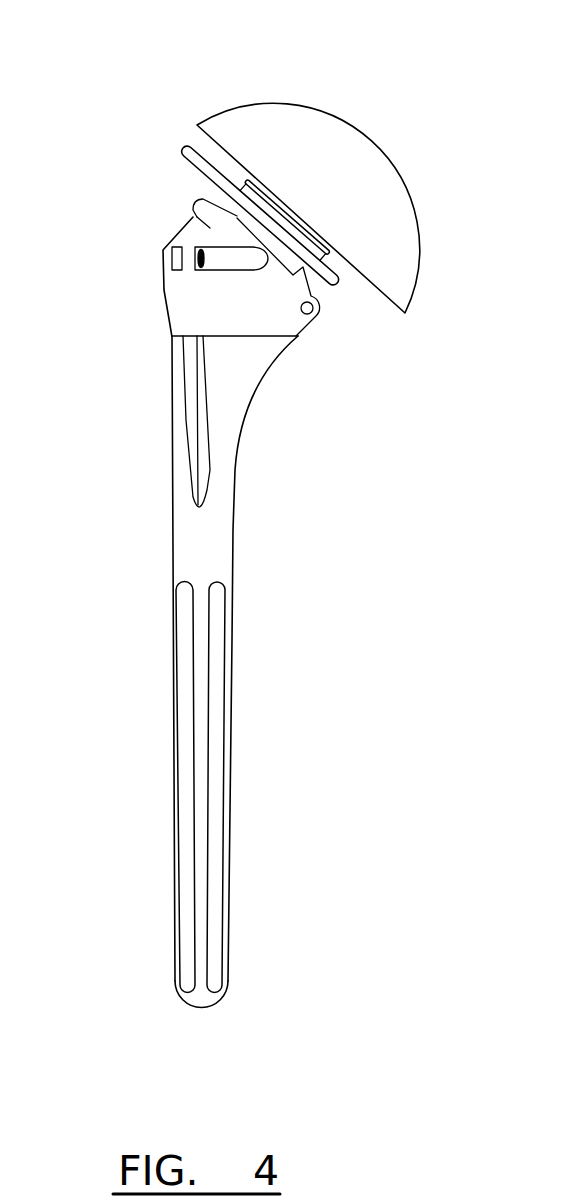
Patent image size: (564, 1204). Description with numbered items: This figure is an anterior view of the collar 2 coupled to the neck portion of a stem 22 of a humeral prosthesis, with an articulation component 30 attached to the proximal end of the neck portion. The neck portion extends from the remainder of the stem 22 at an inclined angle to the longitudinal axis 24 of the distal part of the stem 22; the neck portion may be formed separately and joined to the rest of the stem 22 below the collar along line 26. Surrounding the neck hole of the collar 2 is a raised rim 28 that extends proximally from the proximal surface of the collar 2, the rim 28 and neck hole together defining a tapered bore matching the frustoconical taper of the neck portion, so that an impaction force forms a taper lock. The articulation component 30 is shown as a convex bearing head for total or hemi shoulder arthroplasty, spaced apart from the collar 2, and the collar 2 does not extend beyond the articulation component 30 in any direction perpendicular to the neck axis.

The collar 2 is at (343, 295).
The stem 22 is at (168, 462).
The longitudinal axis 24 is at (232, 422).
The line 26 is at (233, 337).
The raised rim 28 is at (297, 233).
The articulation component 30 is at (298, 150).